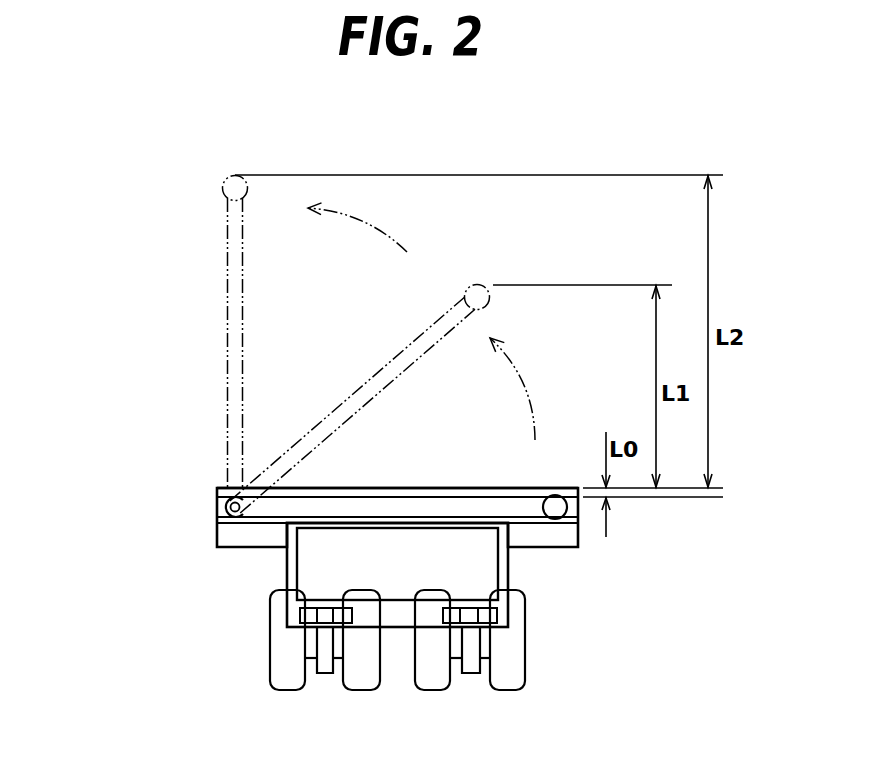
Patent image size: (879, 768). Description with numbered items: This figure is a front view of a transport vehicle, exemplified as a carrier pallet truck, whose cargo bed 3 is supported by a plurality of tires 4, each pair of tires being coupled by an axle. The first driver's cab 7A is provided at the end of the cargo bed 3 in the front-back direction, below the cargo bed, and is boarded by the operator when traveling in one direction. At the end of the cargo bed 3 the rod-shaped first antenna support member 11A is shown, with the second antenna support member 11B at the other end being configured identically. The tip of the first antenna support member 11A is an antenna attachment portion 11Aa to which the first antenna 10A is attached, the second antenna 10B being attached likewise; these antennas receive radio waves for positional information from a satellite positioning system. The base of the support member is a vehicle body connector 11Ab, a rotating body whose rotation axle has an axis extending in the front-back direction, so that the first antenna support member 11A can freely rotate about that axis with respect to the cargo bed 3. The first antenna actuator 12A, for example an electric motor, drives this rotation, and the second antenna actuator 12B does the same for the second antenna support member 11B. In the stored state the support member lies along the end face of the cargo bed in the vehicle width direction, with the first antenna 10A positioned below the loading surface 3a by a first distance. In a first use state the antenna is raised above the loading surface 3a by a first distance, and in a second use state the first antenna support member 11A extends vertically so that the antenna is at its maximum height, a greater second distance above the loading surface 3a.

The cargo bed 3 is at (215, 519).
The loading surface 3a is at (378, 487).
The tires 4 is at (292, 680).
The first driver's cab 7A is at (508, 565).
The first antenna 10A is at (394, 384).
The second antenna 10B is at (394, 384).
The first antenna support member 11A is at (445, 496).
The second antenna support member 11B is at (397, 347).
The antenna attachment portion 11Aa is at (541, 503).
The vehicle body connector 11Ab is at (217, 535).
The first antenna actuator 12A is at (222, 493).
The second antenna actuator 12B is at (171, 466).